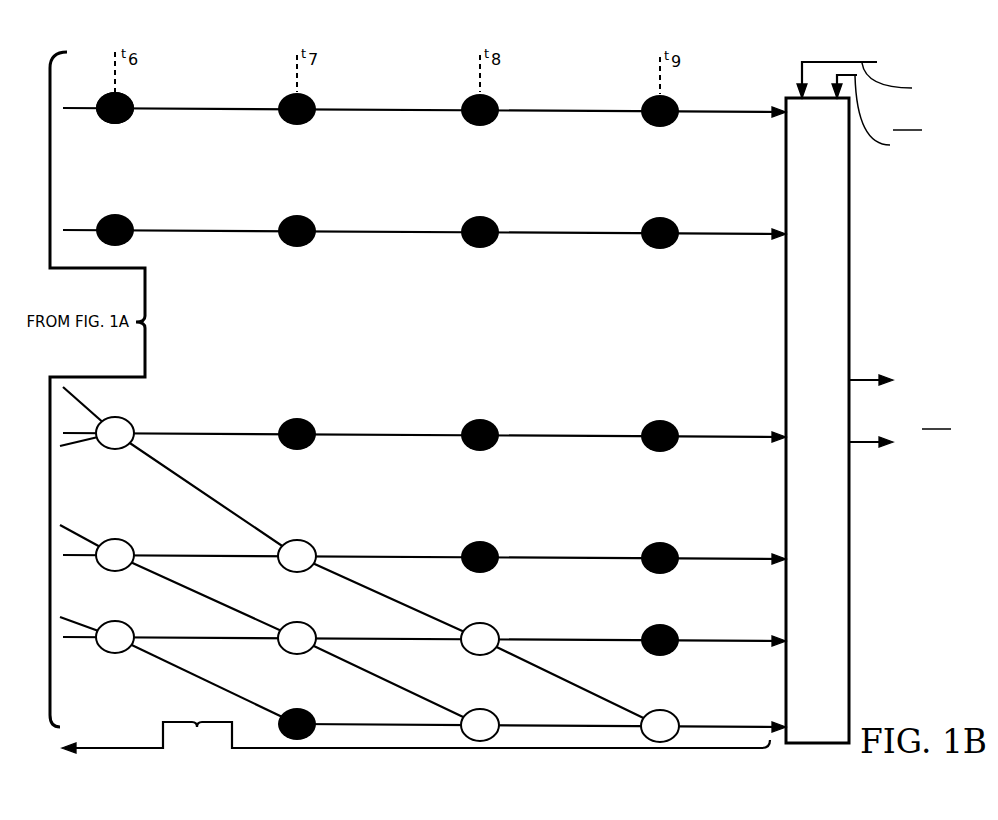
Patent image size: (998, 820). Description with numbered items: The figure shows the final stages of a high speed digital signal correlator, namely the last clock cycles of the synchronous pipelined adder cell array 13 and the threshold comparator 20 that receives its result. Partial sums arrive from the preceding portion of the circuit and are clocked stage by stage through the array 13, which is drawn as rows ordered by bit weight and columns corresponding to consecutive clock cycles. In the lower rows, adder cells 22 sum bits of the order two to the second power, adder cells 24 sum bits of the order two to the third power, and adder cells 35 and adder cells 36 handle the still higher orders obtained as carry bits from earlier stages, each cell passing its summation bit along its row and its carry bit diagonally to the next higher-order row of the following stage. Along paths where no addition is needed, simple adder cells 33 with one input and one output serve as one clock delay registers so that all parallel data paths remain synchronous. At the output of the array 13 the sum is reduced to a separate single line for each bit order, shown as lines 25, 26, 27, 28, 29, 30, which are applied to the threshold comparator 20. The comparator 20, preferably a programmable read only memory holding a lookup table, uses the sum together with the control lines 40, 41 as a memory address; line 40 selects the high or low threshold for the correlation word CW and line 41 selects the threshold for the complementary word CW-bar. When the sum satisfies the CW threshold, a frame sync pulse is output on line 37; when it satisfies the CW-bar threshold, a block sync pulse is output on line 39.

The summing circuit 13 is at (416, 762).
The threshold comparator 20 is at (835, 230).
The adder cells for order 2 exp 2 22 is at (109, 422).
The adder cells for order 2 exp 3 24 is at (284, 545).
The output line for bit order 2 exp 0 25 is at (717, 114).
The output line for bit order 2 exp 1 26 is at (722, 232).
The output line for bit order 2 exp 2 27 is at (722, 435).
The output line for bit order 2 exp 3 28 is at (722, 557).
The output line for bit order 2 exp 4 29 is at (722, 640).
The output line for bit order 2 exp 5 30 is at (722, 726).
The simple adder cells (one clock delay registers) 33 is at (125, 119).
The adder cells for order 2 exp 4 35 is at (118, 653).
The adder cells for order 2 exp 5 36 is at (652, 712).
The frame sync output line 37 is at (855, 378).
The block sync output line 39 is at (855, 445).
The control line for CW threshold 40 is at (812, 60).
The control line for CW-bar threshold 41 is at (835, 74).